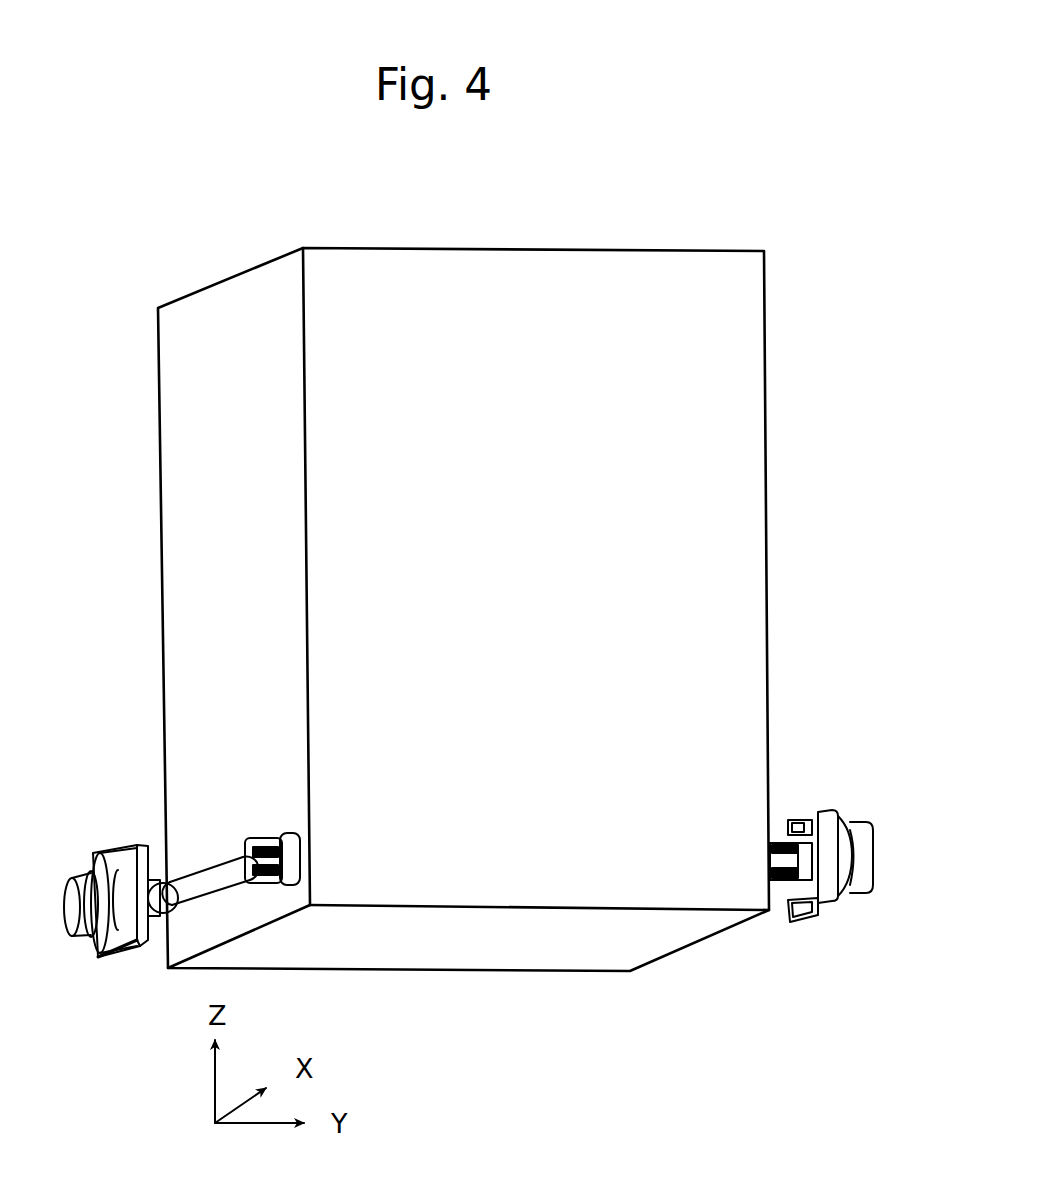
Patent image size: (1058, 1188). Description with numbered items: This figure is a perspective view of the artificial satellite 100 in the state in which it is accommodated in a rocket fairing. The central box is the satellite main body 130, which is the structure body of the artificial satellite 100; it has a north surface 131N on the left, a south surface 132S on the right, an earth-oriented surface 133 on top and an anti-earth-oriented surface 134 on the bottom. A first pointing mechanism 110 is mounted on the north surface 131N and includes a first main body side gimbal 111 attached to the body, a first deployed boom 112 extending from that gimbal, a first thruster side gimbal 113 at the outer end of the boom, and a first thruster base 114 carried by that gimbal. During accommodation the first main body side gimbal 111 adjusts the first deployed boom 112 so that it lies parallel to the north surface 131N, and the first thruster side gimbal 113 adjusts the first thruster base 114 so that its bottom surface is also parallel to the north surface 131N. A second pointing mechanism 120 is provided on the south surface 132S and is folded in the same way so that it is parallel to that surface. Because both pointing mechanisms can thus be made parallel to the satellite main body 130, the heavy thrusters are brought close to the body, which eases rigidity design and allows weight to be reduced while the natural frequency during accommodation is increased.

The artificial satellite 100 is at (473, 604).
The first pointing mechanism 110 is at (182, 896).
The first main body side gimbal 111 is at (263, 830).
The first deployed boom 112 is at (232, 863).
The first thruster side gimbal 113 is at (158, 916).
The first thruster base 114 is at (110, 960).
The second pointing mechanism 120 is at (815, 792).
The satellite main body 130 is at (476, 625).
The north surface 131N is at (200, 513).
The south surface 132S is at (767, 515).
The earth-oriented surface 133 is at (467, 249).
The anti-earth-oriented surface 134 is at (502, 960).